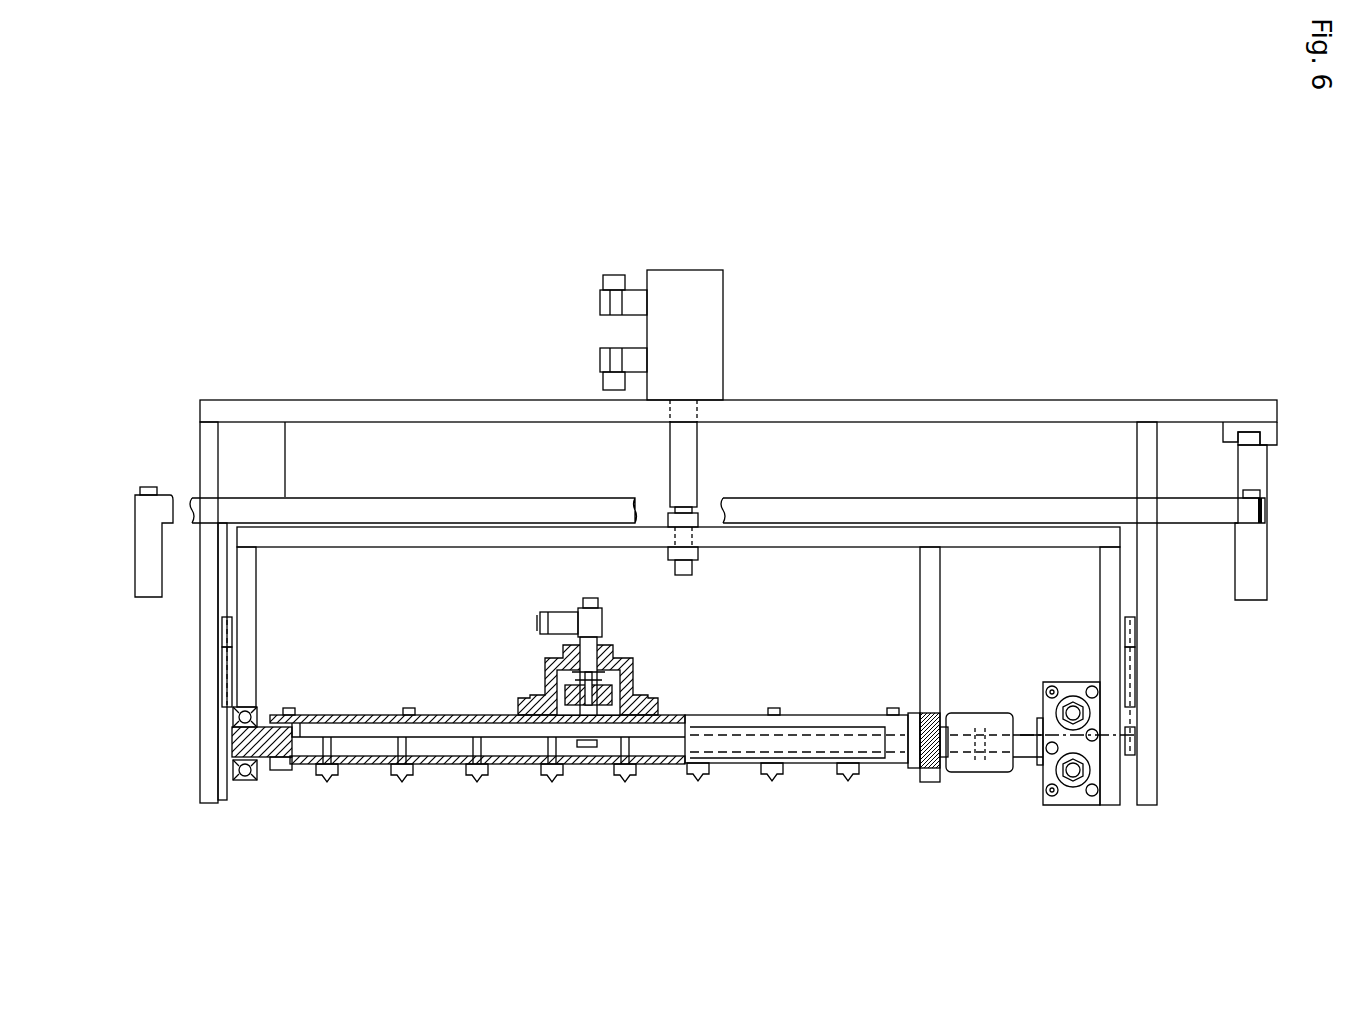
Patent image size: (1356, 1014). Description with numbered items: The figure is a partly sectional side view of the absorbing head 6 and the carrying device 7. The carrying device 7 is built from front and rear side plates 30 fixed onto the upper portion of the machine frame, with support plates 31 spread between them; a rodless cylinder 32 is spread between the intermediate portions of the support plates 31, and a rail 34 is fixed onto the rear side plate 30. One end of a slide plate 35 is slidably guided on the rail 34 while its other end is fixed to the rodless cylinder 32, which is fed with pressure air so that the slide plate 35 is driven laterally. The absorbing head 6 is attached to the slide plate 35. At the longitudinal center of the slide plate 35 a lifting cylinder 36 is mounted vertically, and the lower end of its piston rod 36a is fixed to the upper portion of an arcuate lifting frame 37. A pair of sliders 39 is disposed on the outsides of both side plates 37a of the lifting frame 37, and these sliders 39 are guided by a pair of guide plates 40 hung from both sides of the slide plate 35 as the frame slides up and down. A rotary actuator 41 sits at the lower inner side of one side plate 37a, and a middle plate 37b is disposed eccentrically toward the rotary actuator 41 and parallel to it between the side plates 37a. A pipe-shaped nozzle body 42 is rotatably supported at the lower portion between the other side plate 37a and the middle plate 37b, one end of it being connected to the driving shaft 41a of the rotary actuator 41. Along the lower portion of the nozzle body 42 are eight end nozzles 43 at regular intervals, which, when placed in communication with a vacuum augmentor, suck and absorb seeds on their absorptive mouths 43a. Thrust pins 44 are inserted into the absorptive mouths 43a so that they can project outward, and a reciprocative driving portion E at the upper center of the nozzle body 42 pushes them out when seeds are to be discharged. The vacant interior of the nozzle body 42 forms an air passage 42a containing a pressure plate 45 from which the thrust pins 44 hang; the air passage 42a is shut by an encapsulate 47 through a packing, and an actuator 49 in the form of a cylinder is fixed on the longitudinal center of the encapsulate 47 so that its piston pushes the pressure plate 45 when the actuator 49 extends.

The absorbing head 6 is at (735, 808).
The carrying device 7 is at (1040, 320).
The side plates 30 is at (155, 590).
The support plates 31 is at (541, 500).
The rodless cylinder 32 is at (270, 440).
The rail 34 is at (1250, 443).
The slide plate 35 is at (815, 412).
The lifting cylinder 36 is at (705, 270).
The piston rod 36a is at (697, 458).
The lifting frame 37 is at (756, 545).
The side plates 37a is at (247, 578).
The middle plate 37b is at (938, 672).
The sliders 39 is at (232, 660).
The guide plates 40 is at (197, 725).
The rotary actuator 41 is at (1043, 795).
The driving shaft 41a is at (1000, 765).
The nozzle body 42 is at (810, 765).
The air passage 42a is at (312, 750).
The end nozzles 43 is at (475, 787).
The absorptive mouths 43a is at (318, 782).
The thrust pins 44 is at (388, 737).
The pressure plate 45 is at (497, 727).
The encapsulate 47 is at (447, 712).
The actuator 49 is at (641, 670).
The reciprocative driving portion E is at (680, 655).